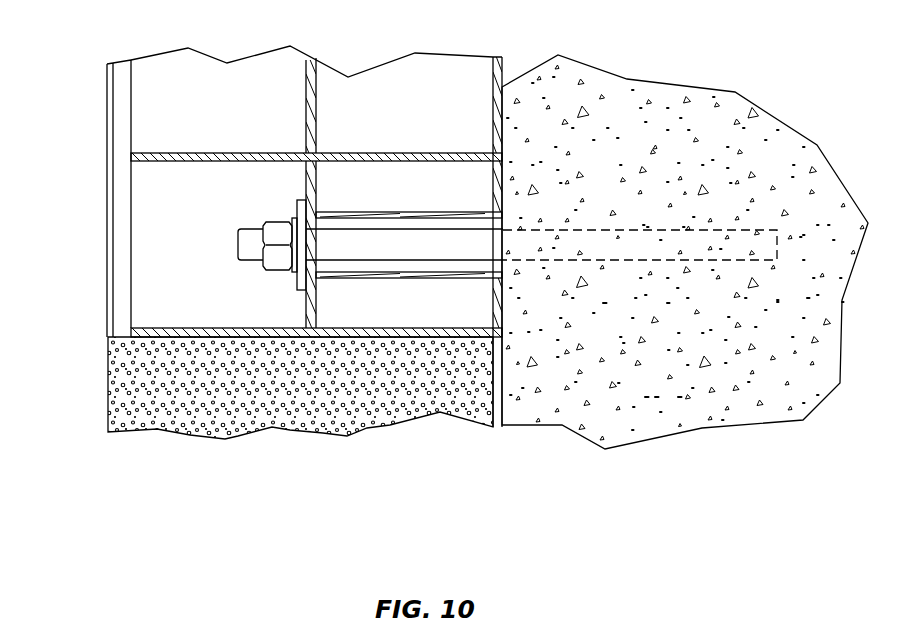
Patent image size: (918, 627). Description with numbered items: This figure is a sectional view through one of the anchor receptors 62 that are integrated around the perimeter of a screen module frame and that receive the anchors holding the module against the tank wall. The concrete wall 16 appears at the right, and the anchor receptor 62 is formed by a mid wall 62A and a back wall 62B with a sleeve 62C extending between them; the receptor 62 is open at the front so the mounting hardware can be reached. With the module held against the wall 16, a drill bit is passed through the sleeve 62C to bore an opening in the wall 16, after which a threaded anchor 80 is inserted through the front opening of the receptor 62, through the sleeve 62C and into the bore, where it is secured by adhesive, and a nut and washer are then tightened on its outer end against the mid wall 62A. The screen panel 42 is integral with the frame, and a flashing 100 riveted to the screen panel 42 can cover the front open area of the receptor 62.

The wall 16 is at (730, 395).
The screen panel 42 is at (122, 293).
The anchor receptor 62 is at (200, 300).
The mid wall 62A is at (305, 310).
The back wall 62B is at (502, 305).
The sleeve 62C is at (417, 277).
The anchor 80 is at (379, 241).
The flashing 100 is at (110, 115).